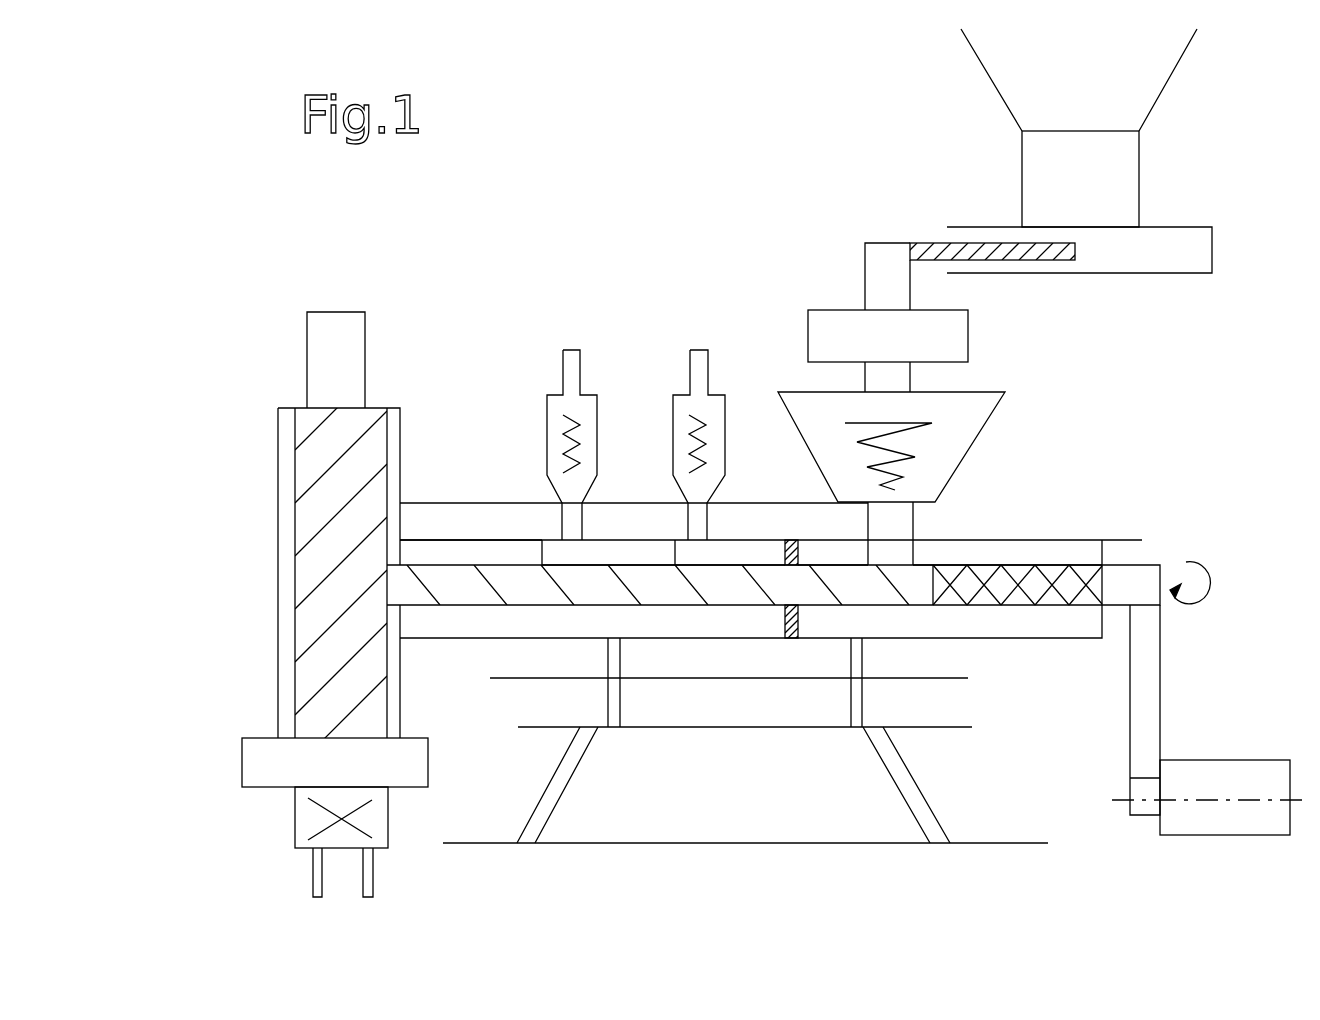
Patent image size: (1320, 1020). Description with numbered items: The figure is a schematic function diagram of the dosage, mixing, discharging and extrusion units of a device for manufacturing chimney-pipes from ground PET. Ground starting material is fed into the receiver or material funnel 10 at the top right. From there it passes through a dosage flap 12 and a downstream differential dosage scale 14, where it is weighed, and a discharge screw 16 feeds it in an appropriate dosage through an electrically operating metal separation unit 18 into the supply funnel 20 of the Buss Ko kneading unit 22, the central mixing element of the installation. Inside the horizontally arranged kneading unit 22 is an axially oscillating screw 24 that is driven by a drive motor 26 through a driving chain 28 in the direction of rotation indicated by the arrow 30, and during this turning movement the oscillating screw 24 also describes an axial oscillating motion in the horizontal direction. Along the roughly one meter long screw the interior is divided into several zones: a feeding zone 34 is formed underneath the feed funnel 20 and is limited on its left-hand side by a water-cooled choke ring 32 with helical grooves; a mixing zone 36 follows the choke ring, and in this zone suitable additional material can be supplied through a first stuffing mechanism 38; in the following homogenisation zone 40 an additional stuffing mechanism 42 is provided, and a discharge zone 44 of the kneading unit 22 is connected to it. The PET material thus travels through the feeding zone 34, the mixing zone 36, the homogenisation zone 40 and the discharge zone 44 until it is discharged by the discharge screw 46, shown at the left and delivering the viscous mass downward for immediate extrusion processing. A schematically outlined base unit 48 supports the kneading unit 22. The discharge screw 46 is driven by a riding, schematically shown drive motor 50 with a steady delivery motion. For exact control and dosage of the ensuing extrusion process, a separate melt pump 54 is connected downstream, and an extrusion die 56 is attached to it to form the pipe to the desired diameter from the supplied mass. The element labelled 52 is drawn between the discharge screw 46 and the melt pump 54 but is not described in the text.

The material funnel 10 is at (1125, 68).
The dosage flap 12 is at (1113, 147).
The differential dosage scale 14 is at (1197, 253).
The discharge screw 16 is at (928, 250).
The metal separation unit 18 is at (943, 337).
The supply funnel 20 is at (935, 447).
The kneading unit 22 is at (448, 466).
The oscillating screw 24 is at (787, 588).
The drive motor 26 is at (1205, 780).
The driving chain 28 is at (1148, 675).
The arrow 30 is at (1200, 560).
The choke ring 32 is at (787, 622).
The feeding zone 34 is at (848, 566).
The mixing zone 36 is at (742, 566).
The first stuffing mechanism 38 is at (678, 405).
The homogenisation zone 40 is at (618, 566).
The additional stuffing mechanism 42 is at (563, 413).
The discharge zone 44 is at (468, 566).
The discharge screw 46 is at (338, 497).
The base unit 48 is at (735, 712).
The drive motor 50 is at (325, 350).
The block 52 is at (318, 765).
The melt pump 54 is at (310, 828).
The extrusion die 56 is at (318, 875).